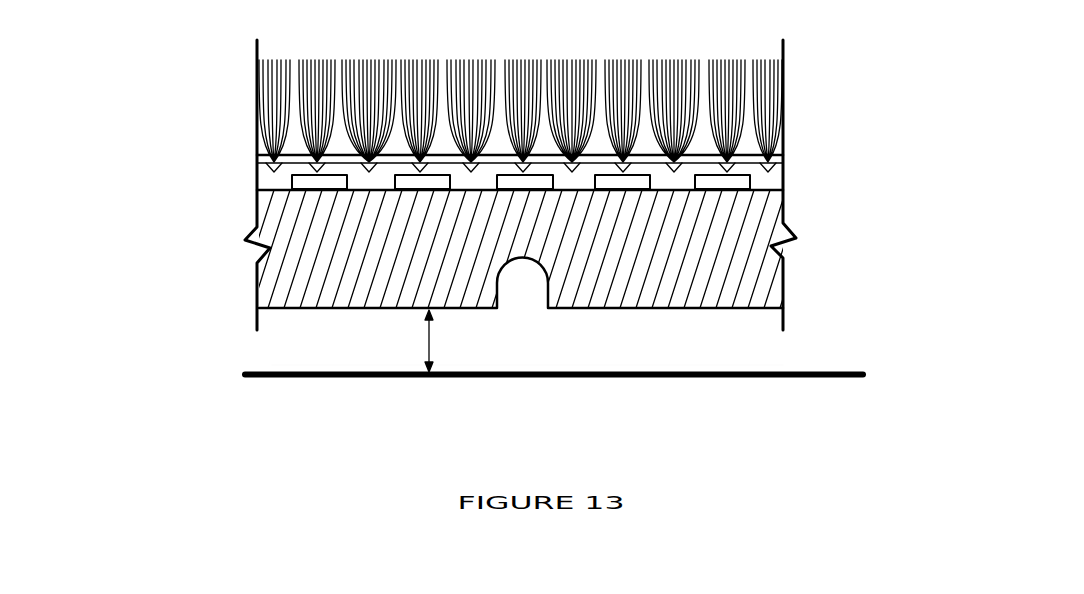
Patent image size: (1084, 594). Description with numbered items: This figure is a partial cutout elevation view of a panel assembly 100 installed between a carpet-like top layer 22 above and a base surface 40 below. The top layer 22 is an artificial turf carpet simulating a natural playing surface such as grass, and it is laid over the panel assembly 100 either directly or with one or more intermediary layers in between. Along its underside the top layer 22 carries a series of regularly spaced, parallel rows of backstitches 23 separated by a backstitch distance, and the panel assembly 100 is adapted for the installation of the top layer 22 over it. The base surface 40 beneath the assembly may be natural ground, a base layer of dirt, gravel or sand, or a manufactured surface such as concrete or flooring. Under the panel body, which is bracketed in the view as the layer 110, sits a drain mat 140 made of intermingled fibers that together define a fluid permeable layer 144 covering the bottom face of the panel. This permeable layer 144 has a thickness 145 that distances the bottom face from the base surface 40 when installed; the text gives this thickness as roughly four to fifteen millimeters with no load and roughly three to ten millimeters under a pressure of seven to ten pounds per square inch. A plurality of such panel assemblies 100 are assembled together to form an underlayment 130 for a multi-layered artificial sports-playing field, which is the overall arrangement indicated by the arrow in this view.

The top layer 22 is at (255, 160).
The backstitches 23 is at (787, 173).
The base surface 40 is at (639, 392).
The panel assembly 100 is at (183, 188).
The backing layer 110 is at (840, 176).
The underlayment 130 is at (145, 230).
The drain mat 140 is at (840, 306).
The fluid permeable layer 144 is at (527, 338).
The thickness 145 is at (425, 341).